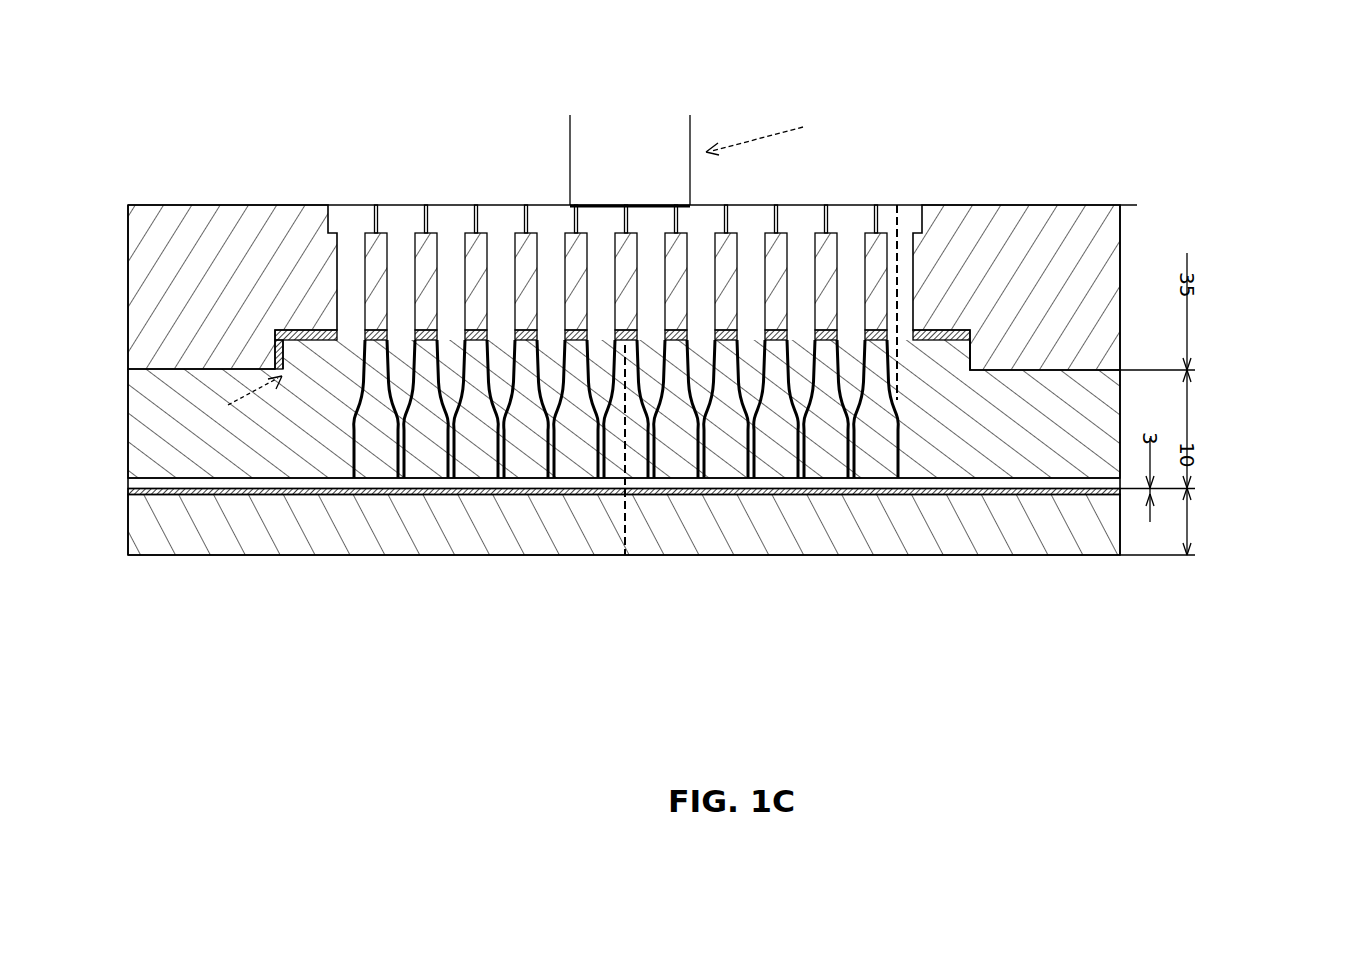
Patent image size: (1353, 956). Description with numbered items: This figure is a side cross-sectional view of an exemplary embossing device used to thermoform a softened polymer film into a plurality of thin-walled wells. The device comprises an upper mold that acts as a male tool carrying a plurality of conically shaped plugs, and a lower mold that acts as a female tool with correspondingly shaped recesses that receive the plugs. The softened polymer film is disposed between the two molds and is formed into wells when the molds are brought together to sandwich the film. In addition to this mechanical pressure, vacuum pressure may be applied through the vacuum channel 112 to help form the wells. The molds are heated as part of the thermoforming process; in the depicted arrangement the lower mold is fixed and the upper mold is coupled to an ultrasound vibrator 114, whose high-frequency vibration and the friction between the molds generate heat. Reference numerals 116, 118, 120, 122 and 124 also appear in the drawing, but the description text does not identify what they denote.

The vacuum channel 112 is at (1220, 140).
The ultrasound vibrator 114 is at (210, 183).
The lower body / substrate 116 is at (836, 582).
The bonding layer 118 is at (353, 347).
The fin socket wall 120 is at (352, 417).
The gap / corner region 122 is at (280, 373).
The thin layer 124 is at (1140, 485).